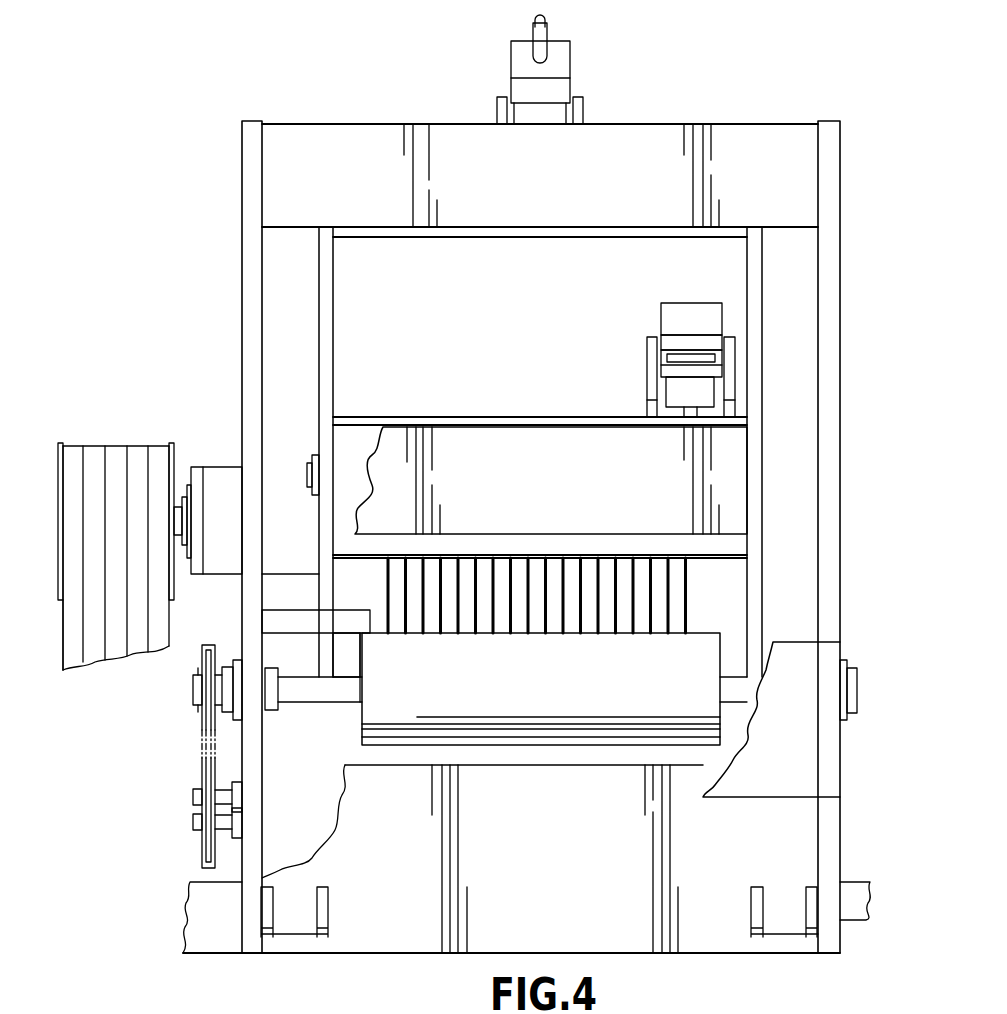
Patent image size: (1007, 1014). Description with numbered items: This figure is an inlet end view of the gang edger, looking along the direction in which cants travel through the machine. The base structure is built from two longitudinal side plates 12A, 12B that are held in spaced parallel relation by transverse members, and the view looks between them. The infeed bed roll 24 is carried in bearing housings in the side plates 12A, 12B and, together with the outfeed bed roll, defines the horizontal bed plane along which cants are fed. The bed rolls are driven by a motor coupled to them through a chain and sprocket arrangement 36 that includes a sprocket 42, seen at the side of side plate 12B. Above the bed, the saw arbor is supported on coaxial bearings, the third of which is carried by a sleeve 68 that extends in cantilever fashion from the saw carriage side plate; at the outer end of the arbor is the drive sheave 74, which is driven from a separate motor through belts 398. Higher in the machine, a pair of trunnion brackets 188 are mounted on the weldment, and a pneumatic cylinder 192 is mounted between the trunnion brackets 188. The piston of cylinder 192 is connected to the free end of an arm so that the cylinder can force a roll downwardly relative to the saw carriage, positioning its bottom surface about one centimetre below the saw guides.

The side plate 12A is at (840, 143).
The side plate 12B is at (242, 143).
The infeed bed roll 24 is at (548, 745).
The chain and sprocket arrangement 36 is at (196, 739).
The sprocket 42 is at (197, 782).
The sleeve 68 is at (221, 467).
The drive sheave 74 is at (58, 458).
The trunnion brackets 188 is at (647, 358).
The pneumatic cylinder 192 is at (661, 312).
The belts 398 is at (62, 640).